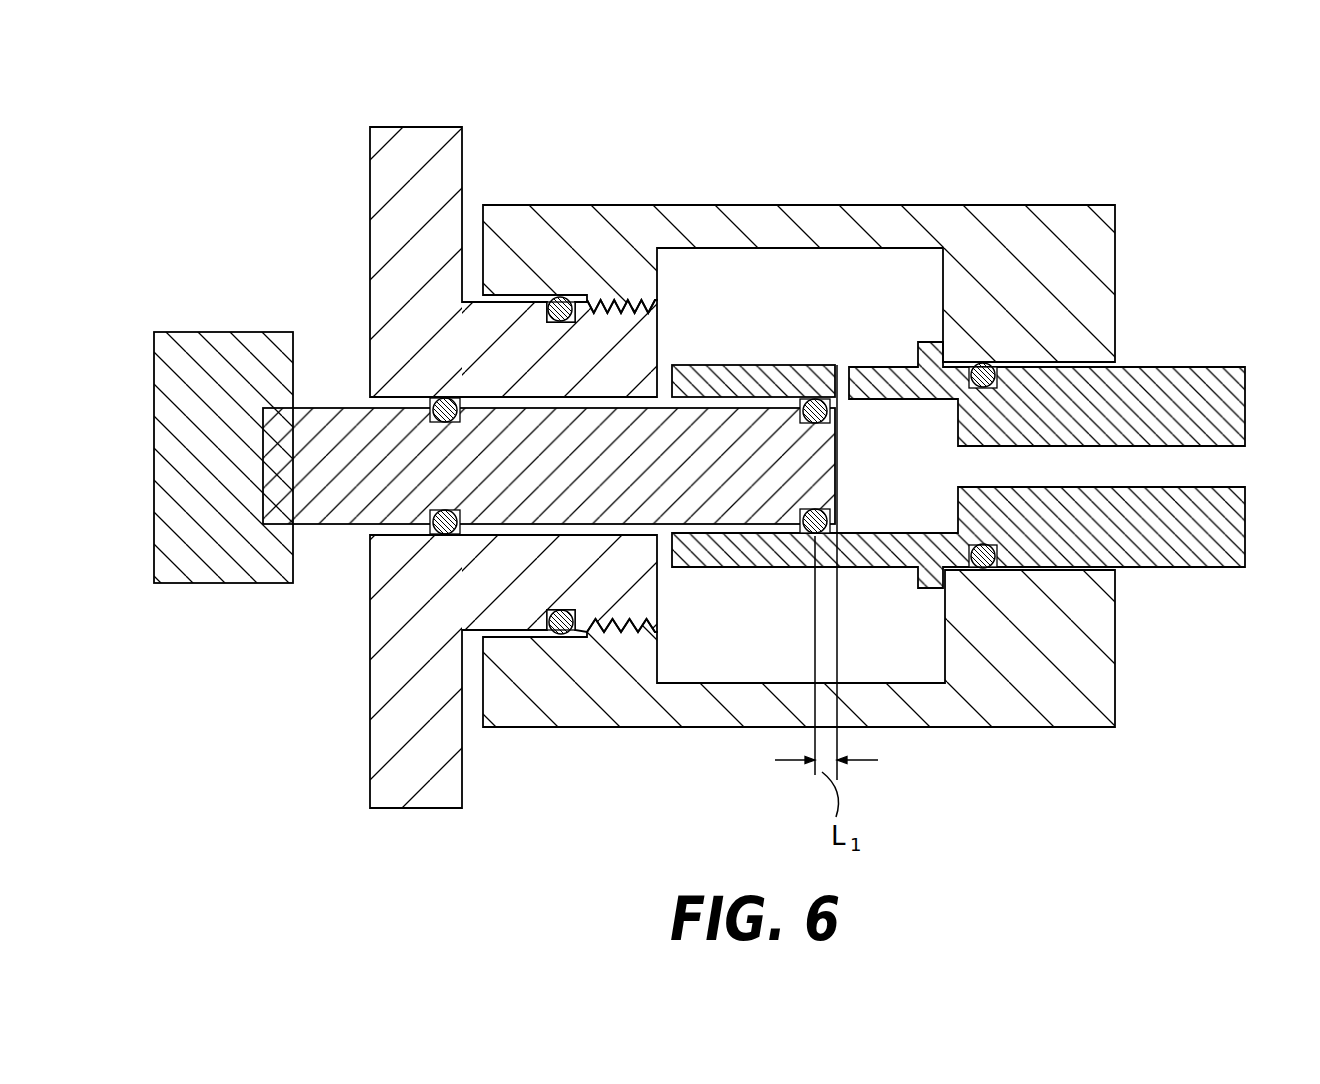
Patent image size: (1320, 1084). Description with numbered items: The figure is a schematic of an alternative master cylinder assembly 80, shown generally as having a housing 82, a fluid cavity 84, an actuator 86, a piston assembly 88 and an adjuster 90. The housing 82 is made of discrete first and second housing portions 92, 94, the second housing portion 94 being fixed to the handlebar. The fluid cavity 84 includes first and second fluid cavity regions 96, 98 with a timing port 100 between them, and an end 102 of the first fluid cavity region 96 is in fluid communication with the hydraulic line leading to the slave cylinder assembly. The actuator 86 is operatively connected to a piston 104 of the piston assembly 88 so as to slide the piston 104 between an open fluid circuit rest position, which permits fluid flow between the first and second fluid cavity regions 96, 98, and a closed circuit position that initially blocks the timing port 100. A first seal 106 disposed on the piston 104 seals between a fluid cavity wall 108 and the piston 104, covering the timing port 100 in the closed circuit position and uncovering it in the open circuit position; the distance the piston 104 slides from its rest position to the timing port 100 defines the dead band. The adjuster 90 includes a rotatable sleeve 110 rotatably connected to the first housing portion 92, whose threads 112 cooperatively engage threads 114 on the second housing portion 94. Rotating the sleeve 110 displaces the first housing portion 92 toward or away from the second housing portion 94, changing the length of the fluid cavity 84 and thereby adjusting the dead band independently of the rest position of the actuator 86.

The master cylinder assembly 80 is at (1021, 140).
The housing 82 is at (328, 227).
The fluid cavity 84 is at (951, 545).
The actuator 86 is at (215, 563).
The piston assembly 88 is at (338, 543).
The adjuster 90 is at (703, 180).
The first housing portion 92 is at (1155, 392).
The second housing portion 94 is at (487, 322).
The first fluid cavity region 96 is at (923, 517).
The second fluid cavity region 98 is at (822, 268).
The timing port 100 is at (840, 378).
The end of first fluid cavity region 102 is at (1192, 472).
The piston 104 is at (350, 437).
The first seal 106 is at (808, 527).
The fluid cavity wall 108 is at (735, 535).
The rotatable sleeve 110 is at (758, 222).
The threads 112 is at (595, 300).
The threads 114 is at (603, 322).